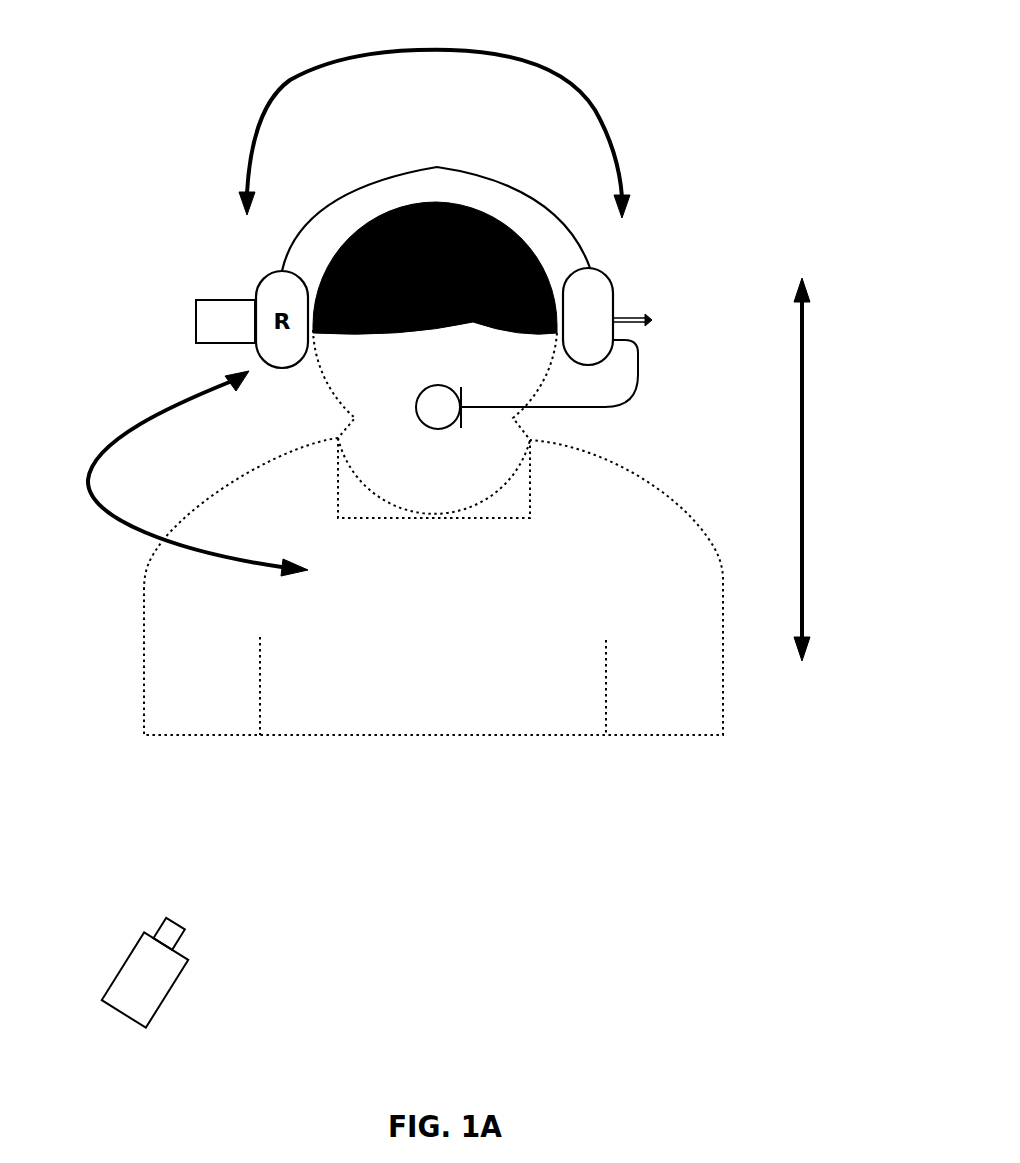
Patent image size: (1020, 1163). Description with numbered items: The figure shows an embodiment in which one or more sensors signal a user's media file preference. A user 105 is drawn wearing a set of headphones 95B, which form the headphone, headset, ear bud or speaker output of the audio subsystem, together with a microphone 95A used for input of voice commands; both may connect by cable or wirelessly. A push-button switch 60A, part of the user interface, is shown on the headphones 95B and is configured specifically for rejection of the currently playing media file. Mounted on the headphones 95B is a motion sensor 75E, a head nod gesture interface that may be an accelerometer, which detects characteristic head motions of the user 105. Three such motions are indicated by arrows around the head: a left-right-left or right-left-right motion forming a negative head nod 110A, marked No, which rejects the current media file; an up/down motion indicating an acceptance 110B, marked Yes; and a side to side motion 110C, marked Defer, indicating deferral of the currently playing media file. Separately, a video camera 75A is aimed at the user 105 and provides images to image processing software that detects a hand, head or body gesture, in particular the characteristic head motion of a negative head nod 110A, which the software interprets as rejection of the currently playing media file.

The user 105 is at (433, 735).
The headphones 95B is at (602, 307).
The push-button switch 60A is at (653, 323).
The microphone 95A is at (443, 423).
The motion sensor 75E is at (227, 300).
The deferral head motion 110C is at (277, 88).
The negative head nod 110A is at (92, 503).
The acceptance head motion 110B is at (803, 508).
The video camera 75A is at (178, 987).